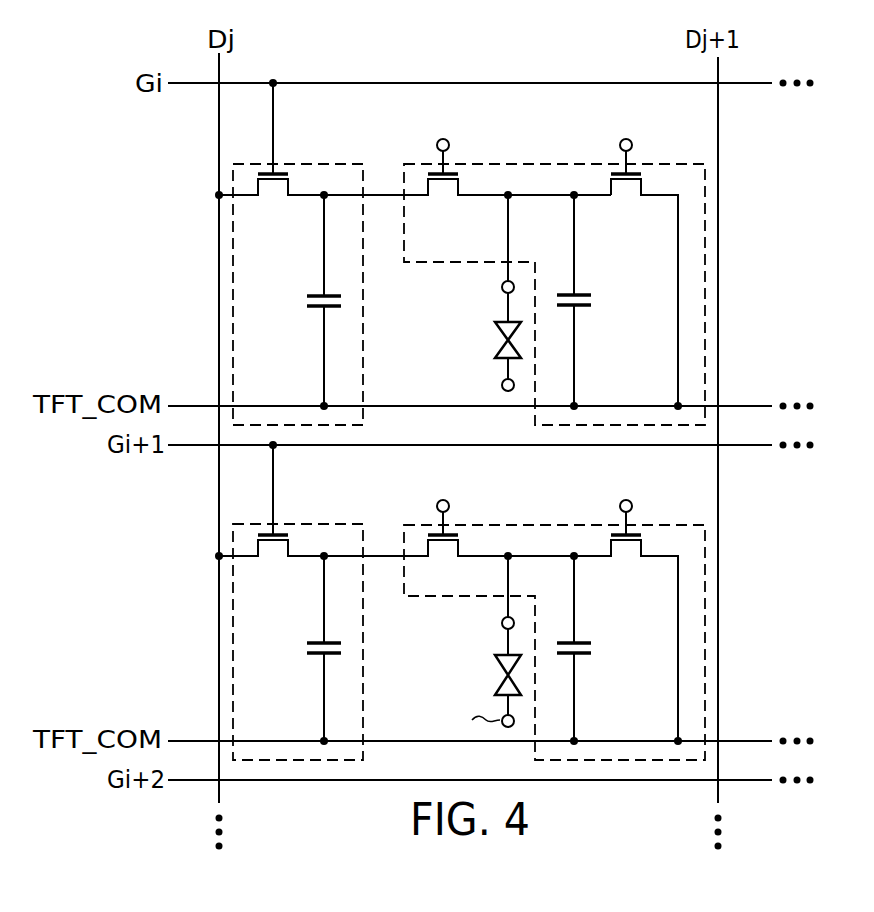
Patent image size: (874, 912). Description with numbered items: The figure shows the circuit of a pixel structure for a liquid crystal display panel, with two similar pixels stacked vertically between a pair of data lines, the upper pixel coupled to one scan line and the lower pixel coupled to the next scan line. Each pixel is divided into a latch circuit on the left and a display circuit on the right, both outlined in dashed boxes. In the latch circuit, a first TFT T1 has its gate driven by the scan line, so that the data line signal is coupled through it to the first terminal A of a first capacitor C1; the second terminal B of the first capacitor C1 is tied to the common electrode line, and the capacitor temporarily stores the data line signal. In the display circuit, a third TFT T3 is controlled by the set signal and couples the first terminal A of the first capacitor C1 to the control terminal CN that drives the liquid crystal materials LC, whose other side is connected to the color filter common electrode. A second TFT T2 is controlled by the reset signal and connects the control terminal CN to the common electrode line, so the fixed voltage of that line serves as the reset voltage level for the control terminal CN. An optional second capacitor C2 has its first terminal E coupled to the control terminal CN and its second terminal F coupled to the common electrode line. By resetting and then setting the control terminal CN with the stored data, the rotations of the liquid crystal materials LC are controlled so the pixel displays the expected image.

The first TFT T1 is at (277, 206).
The second TFT T2 is at (633, 206).
The third TFT T3 is at (448, 206).
The first capacitor C1 is at (308, 300).
The second capacitor C2 is at (594, 300).
The liquid crystal materials LC is at (495, 338).
The control terminal CN is at (501, 287).
The first terminal of the first capacitor A is at (325, 197).
The second terminal of the first capacitor B is at (327, 403).
The first terminal of the second capacitor E is at (573, 198).
The second terminal of the second capacitor F is at (571, 402).